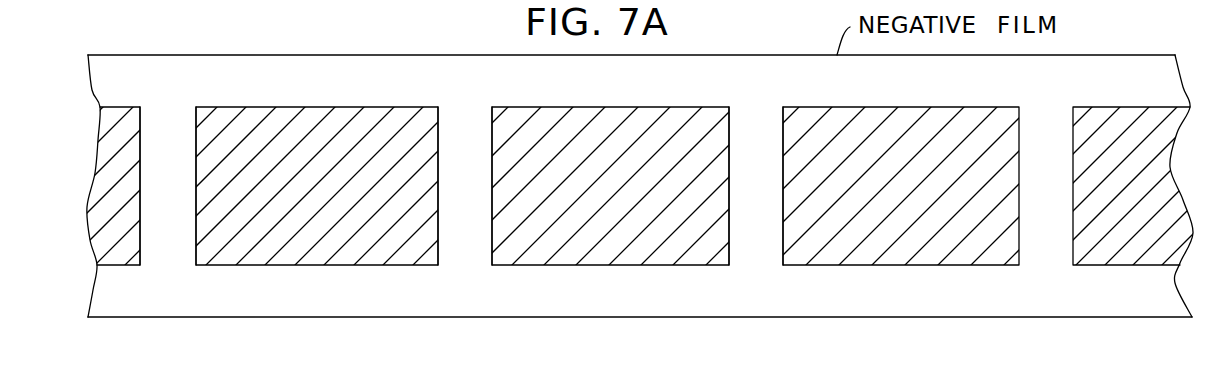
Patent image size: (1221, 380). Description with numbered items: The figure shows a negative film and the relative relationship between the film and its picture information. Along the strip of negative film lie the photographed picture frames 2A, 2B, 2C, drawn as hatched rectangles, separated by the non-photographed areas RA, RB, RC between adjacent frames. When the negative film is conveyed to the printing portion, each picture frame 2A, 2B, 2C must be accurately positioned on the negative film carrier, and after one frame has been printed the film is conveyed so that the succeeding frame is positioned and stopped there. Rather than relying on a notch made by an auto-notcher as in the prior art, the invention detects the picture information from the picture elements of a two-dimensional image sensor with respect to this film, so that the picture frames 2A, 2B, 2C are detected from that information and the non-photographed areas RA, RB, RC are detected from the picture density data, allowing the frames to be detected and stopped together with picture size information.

The photographed picture frame 2A is at (372, 266).
The photographed picture frame 2B is at (662, 266).
The photographed picture frame 2C is at (925, 266).
The non-photographed area RA is at (170, 275).
The non-photographed area RB is at (467, 267).
The non-photographed area RC is at (762, 267).